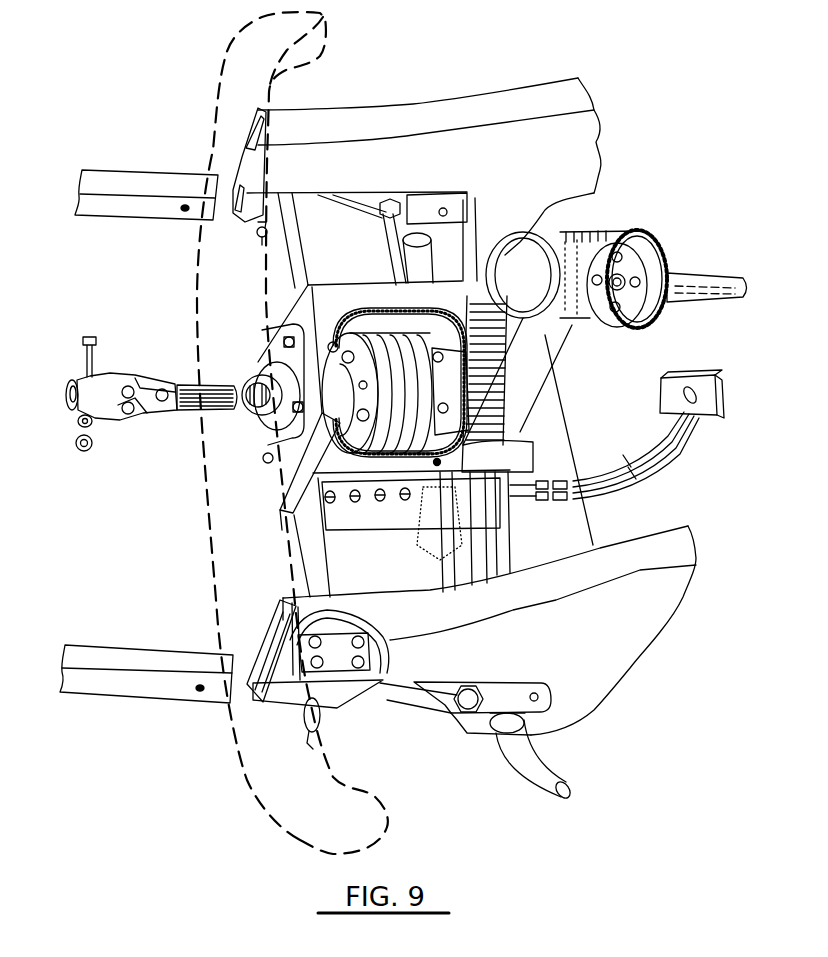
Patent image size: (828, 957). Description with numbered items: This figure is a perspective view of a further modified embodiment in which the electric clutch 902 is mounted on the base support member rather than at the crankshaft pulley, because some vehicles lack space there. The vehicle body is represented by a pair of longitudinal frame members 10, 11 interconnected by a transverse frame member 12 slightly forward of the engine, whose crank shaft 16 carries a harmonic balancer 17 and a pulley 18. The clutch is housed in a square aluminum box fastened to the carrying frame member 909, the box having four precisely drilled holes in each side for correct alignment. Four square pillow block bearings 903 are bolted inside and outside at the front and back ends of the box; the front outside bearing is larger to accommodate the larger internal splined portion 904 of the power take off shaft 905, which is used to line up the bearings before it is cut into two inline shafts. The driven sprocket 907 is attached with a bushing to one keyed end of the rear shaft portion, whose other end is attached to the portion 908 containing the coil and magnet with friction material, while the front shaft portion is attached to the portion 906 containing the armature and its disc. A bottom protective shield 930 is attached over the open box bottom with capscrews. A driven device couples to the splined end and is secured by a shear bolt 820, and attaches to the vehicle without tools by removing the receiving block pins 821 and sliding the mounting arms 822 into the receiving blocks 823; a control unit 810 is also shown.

The longitudinal frame member 10 is at (419, 98).
The longitudinal frame member 11 is at (428, 656).
The transverse frame member 12 is at (574, 527).
The crank shaft 16 is at (690, 276).
The harmonic balancer 17 is at (645, 236).
The pulley 18 is at (598, 230).
The control box 810 is at (692, 378).
The shear bolt 820 is at (93, 338).
The receiving block pins 821 is at (258, 232).
The mounting arms 822 is at (143, 182).
The receiving blocks 823 is at (283, 733).
The electric clutch 902 is at (360, 423).
The square pillow block bearings 903 is at (265, 433).
The internal splined portion 904 is at (258, 415).
The power take off shaft 905 is at (243, 376).
The armature portion 906 is at (354, 437).
The driven sprocket 907 is at (521, 412).
The coil and magnet portion 908 is at (421, 335).
The carrying frame member 909 is at (308, 537).
The bottom protective shield 930 is at (255, 575).